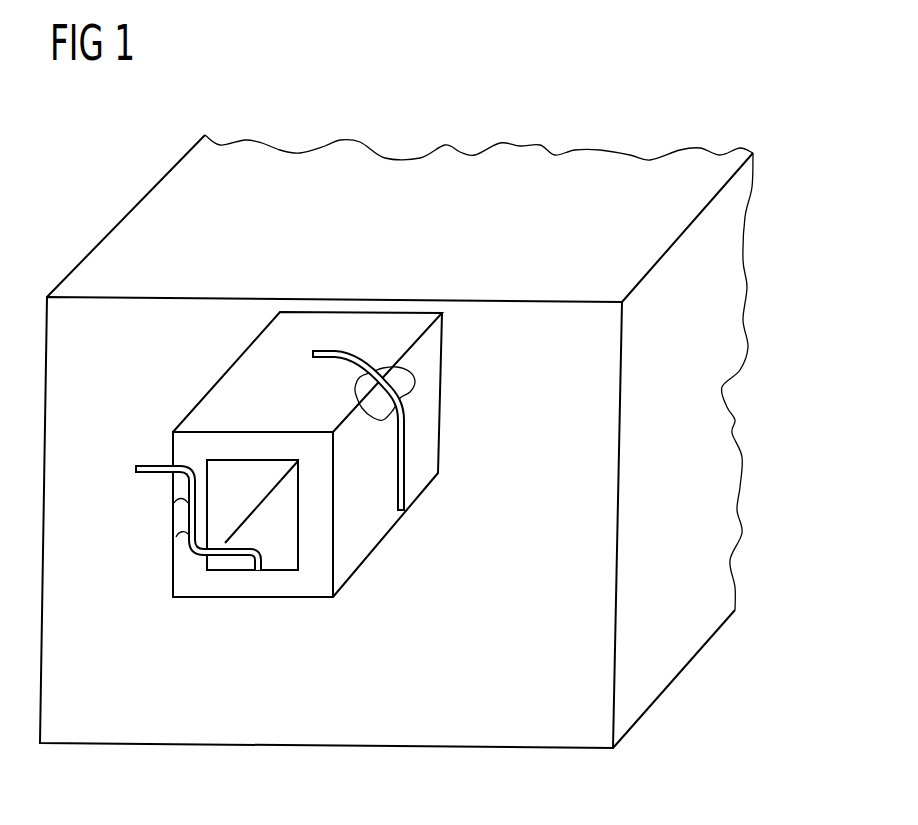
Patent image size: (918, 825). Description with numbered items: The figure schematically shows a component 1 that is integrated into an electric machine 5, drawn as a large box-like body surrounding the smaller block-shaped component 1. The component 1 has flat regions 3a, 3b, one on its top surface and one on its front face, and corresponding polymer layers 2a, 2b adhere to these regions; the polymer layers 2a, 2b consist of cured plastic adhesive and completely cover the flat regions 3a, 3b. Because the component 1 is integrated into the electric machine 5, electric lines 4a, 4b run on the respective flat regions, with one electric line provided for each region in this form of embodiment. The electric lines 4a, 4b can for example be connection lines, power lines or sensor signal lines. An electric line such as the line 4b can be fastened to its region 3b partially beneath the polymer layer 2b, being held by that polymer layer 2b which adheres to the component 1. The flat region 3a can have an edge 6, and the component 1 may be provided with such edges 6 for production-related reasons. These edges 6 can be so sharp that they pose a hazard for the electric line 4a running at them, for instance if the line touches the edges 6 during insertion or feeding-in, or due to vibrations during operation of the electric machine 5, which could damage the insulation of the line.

The component 1 is at (300, 582).
The polymer layer 2a is at (407, 378).
The polymer layer 2b is at (173, 530).
The flat region 3a is at (410, 362).
The flat region 3b is at (160, 518).
The electric line 4a is at (410, 442).
The electric line 4b is at (140, 464).
The electric machine 5 is at (153, 204).
The edge 6 is at (255, 340).